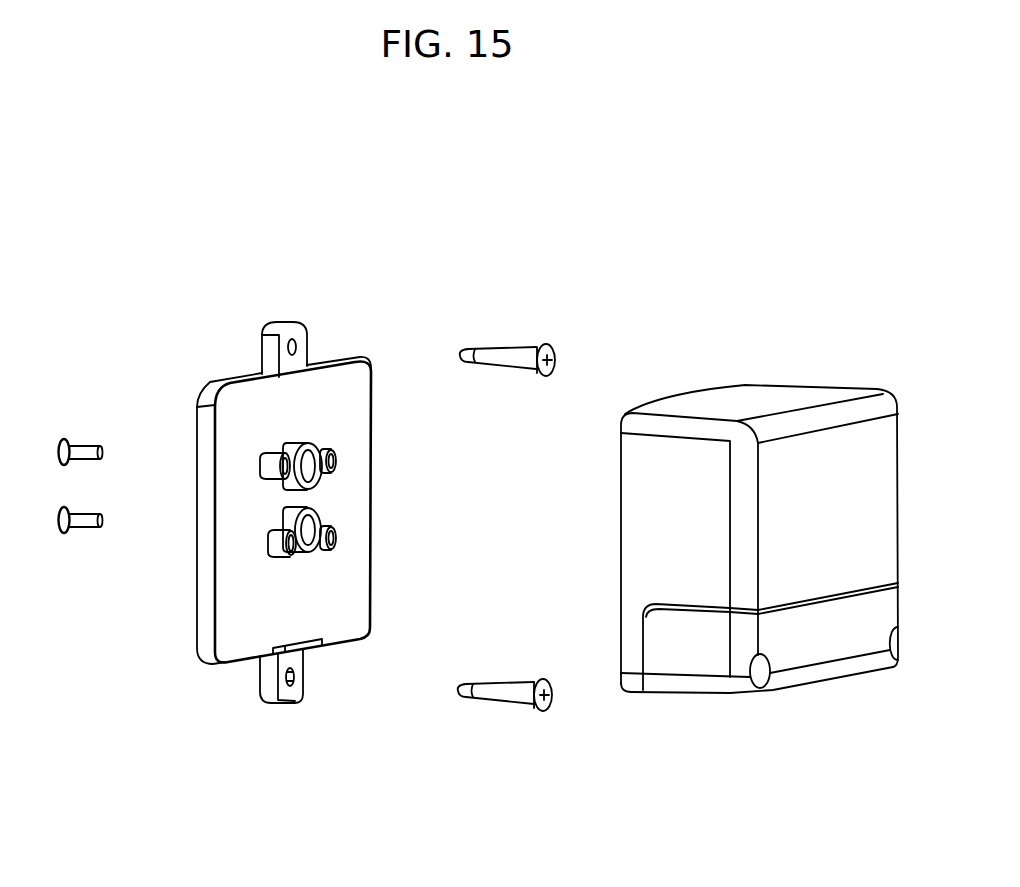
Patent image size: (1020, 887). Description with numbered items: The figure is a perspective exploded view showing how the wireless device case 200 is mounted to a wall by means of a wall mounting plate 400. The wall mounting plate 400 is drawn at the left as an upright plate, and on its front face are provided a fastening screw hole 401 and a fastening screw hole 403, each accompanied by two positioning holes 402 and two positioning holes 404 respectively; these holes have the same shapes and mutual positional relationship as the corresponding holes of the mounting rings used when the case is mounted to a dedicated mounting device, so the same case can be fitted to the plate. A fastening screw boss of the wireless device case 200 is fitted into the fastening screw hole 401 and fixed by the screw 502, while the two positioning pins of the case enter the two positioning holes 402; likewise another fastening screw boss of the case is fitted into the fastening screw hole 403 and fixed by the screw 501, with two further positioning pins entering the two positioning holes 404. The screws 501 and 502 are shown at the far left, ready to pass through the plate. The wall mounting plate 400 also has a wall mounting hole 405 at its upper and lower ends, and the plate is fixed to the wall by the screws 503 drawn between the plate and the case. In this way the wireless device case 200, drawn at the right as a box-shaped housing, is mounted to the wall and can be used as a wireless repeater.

The wireless device case 200 is at (834, 410).
The wall mounting plate 400 is at (197, 410).
The fastening screw hole 401 is at (315, 527).
The positioning holes 402 is at (330, 555).
The fastening screw hole 403 is at (295, 490).
The positioning holes 404 is at (322, 450).
The wall mounting hole 405 is at (292, 341).
The screw 501 is at (86, 446).
The screw 502 is at (83, 521).
The screw 503 is at (520, 688).